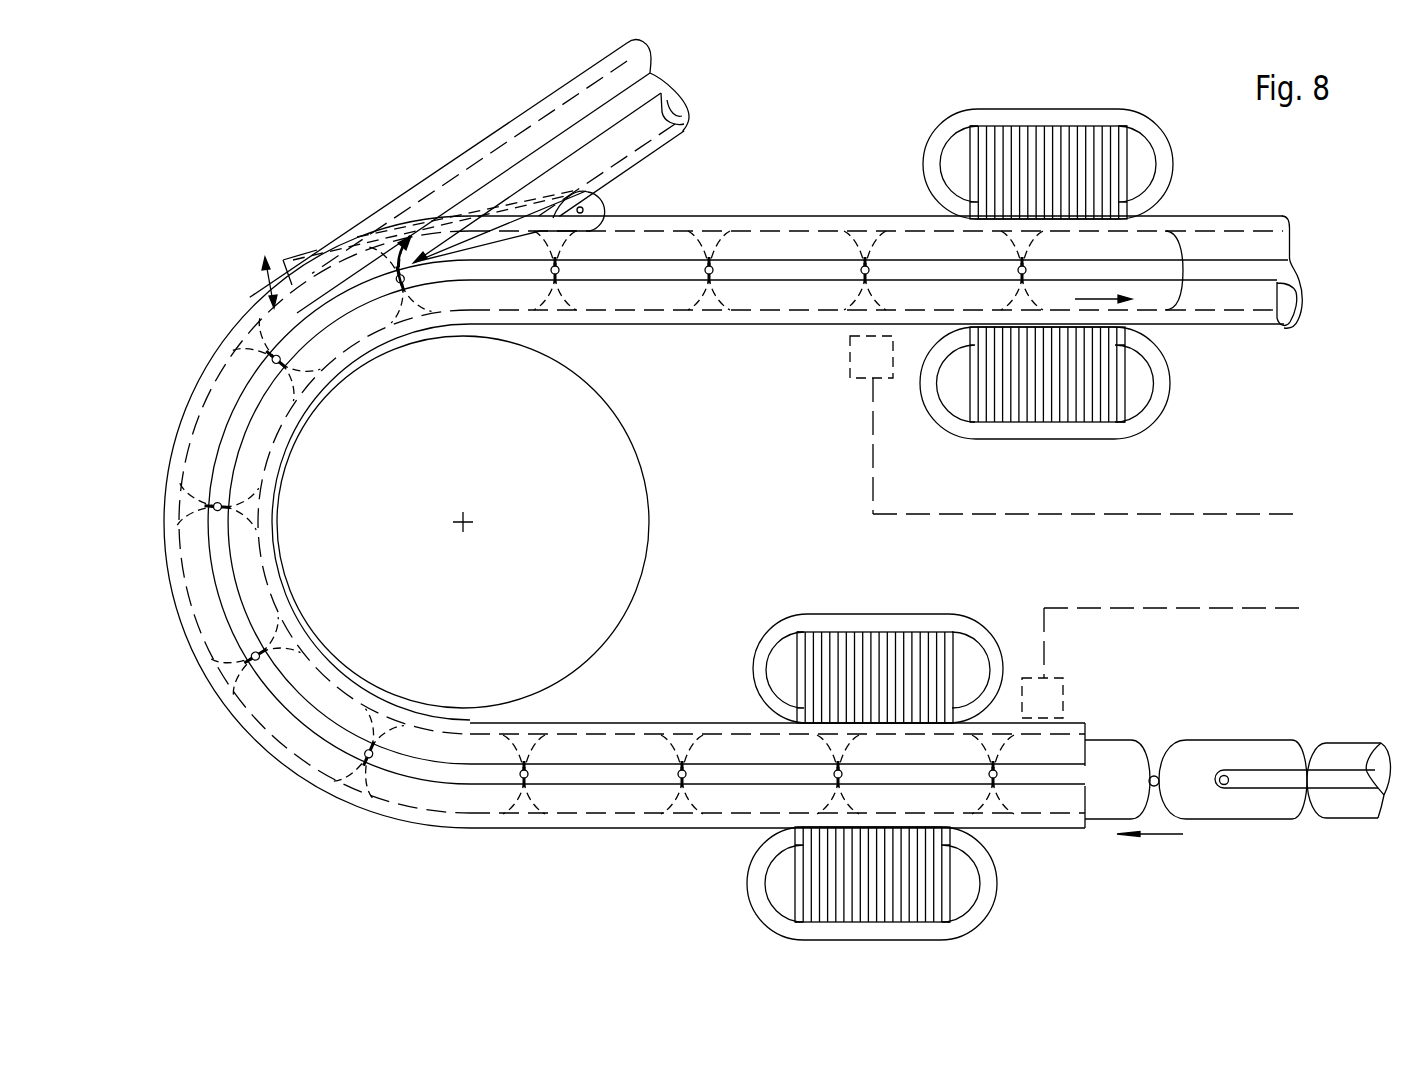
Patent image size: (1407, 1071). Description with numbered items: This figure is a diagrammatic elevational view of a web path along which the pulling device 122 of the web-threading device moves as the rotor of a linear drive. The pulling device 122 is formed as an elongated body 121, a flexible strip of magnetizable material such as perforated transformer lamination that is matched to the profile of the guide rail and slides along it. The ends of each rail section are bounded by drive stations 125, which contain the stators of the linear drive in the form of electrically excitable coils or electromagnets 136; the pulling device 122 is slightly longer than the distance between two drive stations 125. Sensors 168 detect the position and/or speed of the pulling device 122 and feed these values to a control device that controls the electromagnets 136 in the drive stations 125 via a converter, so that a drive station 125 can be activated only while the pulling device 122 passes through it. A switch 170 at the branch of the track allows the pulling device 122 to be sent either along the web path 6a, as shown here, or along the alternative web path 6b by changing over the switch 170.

The web path 6a is at (1305, 280).
The web path 6b is at (683, 77).
The elongated body 121 is at (463, 807).
The pulling device 122 is at (208, 626).
The drive station 125 is at (928, 137).
The electromagnet 136 is at (1037, 410).
The sensor 168 is at (852, 365).
The switch 170 is at (407, 236).